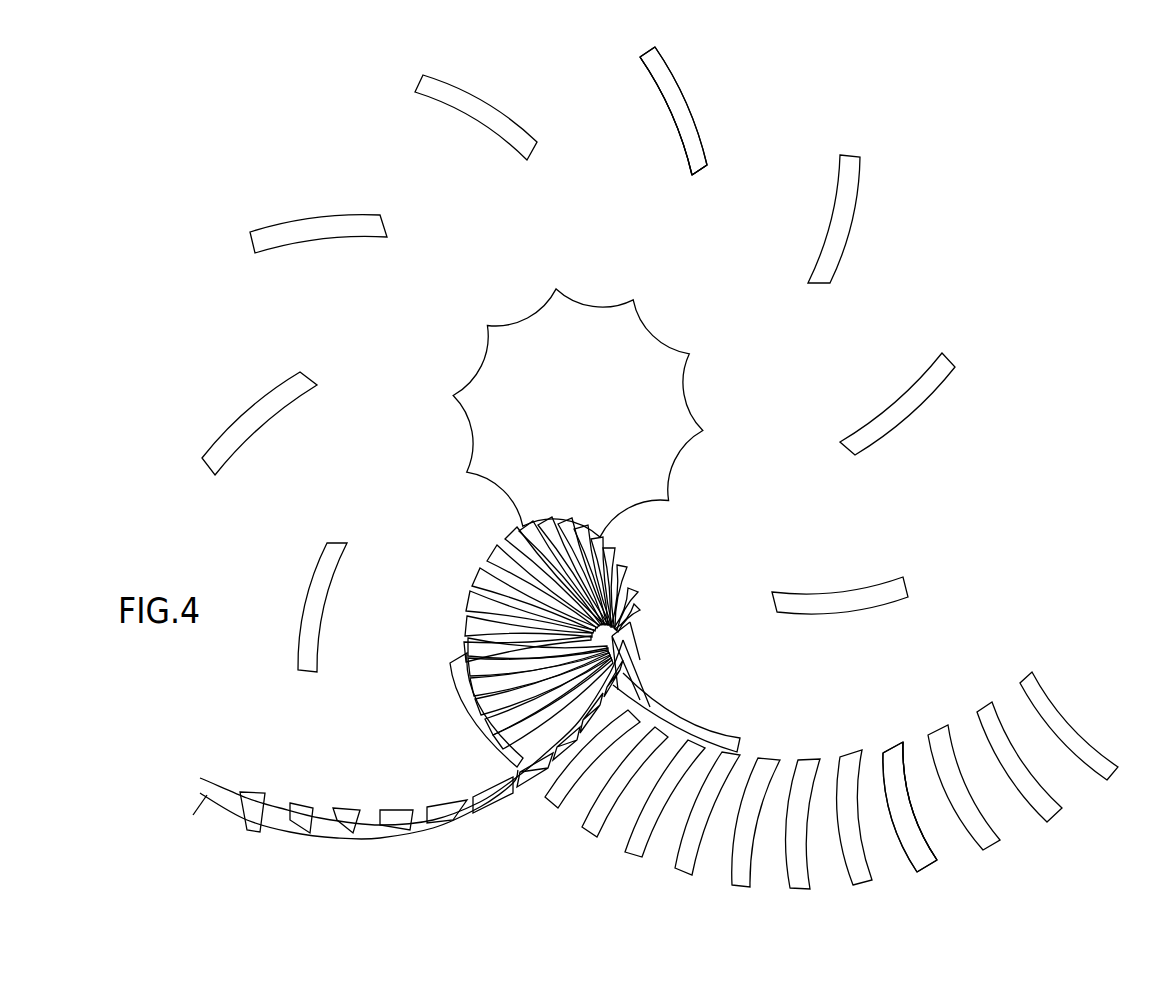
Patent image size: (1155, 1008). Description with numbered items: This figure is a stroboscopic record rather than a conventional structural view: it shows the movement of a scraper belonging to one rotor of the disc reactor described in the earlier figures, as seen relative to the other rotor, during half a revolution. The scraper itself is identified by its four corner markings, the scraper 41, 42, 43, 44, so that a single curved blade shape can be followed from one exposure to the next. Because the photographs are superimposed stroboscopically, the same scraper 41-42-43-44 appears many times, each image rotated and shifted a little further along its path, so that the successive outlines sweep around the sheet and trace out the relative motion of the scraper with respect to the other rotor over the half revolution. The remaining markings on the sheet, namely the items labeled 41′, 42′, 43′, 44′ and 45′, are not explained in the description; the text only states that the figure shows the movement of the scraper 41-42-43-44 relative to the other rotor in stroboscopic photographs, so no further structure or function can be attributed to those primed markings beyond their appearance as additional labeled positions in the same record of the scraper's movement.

The blade 41′ is at (673, 100).
The leading edge of blade 42′ is at (647, 111).
The trailing edge of blade 43′ is at (679, 129).
The convex side of blade 44′ is at (707, 111).
The hub 45′ is at (578, 405).
The scraper 41 is at (910, 823).
The scraper 42 is at (938, 811).
The scraper 43 is at (910, 787).
The scraper 44 is at (884, 802).